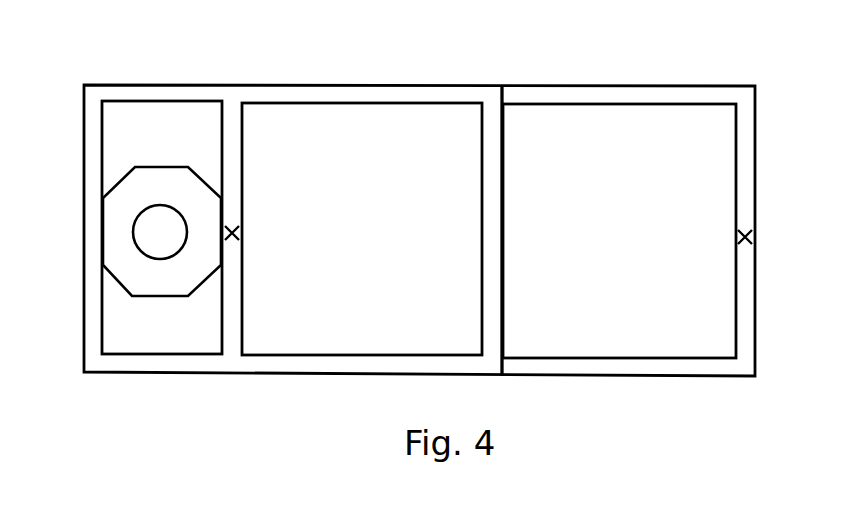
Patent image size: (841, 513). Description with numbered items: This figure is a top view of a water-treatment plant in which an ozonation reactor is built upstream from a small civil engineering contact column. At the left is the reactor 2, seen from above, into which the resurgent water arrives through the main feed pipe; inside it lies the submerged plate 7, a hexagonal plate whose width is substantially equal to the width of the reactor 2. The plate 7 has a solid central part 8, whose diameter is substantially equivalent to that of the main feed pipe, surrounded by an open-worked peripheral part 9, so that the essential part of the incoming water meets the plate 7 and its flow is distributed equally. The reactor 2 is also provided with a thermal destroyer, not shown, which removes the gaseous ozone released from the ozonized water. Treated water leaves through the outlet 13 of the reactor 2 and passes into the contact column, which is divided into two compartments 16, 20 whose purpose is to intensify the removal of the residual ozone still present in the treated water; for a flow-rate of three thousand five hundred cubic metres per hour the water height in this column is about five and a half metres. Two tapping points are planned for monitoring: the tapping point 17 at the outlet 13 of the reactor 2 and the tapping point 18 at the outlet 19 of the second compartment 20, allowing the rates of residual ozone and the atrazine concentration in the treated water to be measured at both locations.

The reactor 2 is at (157, 93).
The submerged plate 7 is at (104, 245).
The solid central part 8 is at (159, 232).
The open-worked peripheral part 9 is at (169, 276).
The outlet of the reactor 13 is at (232, 141).
The first compartment of the contact column 16 is at (423, 243).
The tapping point 17 is at (238, 233).
The tapping point 18 is at (744, 240).
The outlet of the second compartment 19 is at (745, 178).
The second compartment of the contact column 20 is at (580, 300).